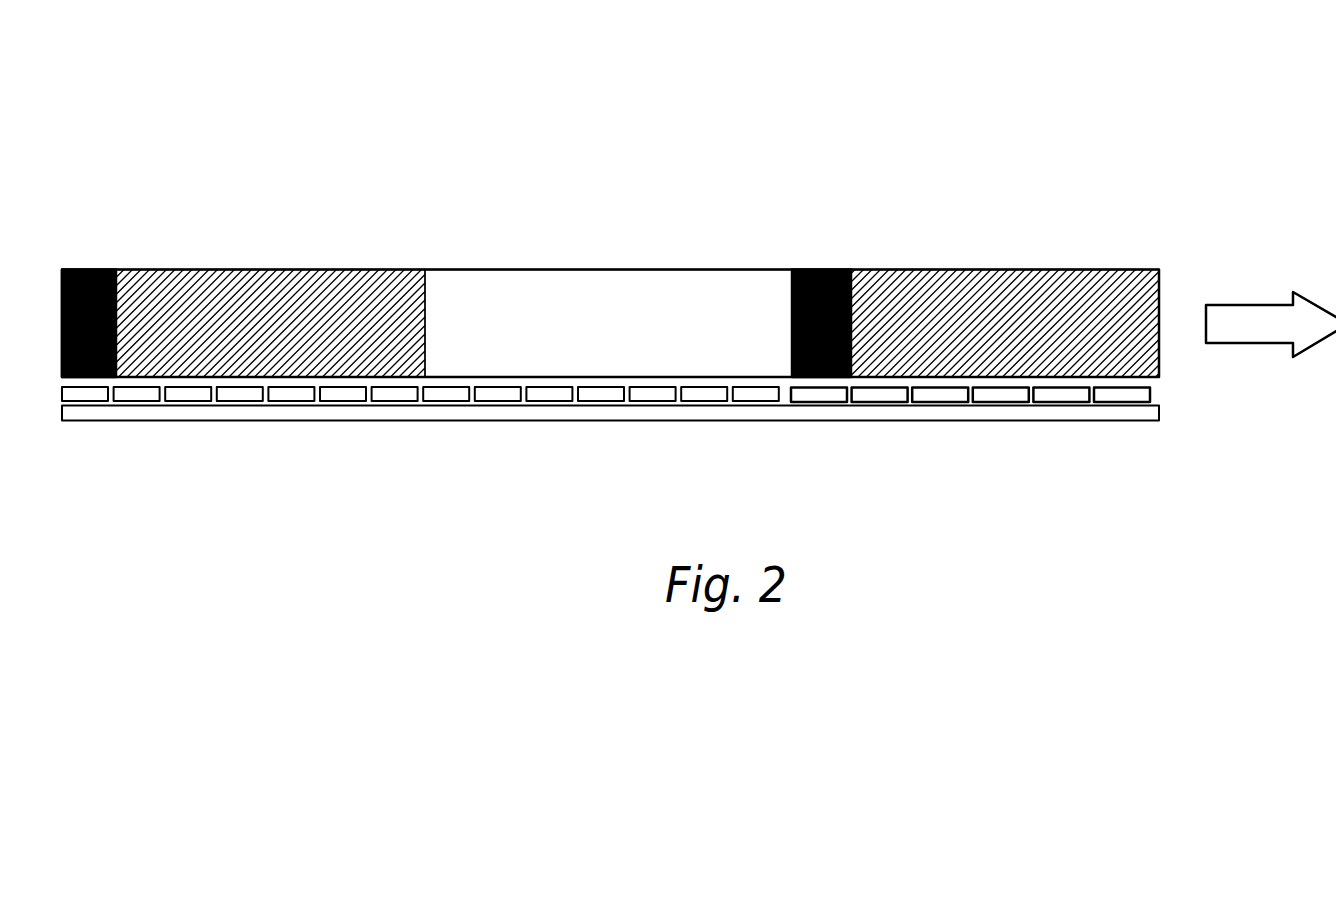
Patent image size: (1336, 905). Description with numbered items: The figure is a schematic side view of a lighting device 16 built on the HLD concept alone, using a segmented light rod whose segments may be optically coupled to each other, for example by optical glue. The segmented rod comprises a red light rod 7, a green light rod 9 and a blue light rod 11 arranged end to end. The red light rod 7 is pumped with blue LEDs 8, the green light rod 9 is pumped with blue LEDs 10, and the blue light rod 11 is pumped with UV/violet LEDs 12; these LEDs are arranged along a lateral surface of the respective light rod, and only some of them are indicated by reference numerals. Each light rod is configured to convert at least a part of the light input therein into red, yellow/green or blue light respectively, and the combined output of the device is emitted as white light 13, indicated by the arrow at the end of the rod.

The red light rod 7 is at (300, 270).
The blue LEDs 8 is at (85, 402).
The green light rod 9 is at (605, 270).
The blue LEDs 10 is at (449, 402).
The blue light rod 11 is at (953, 270).
The UV/violet LEDs 12 is at (828, 403).
The white light 13 is at (1250, 279).
The lighting device 16 is at (823, 131).